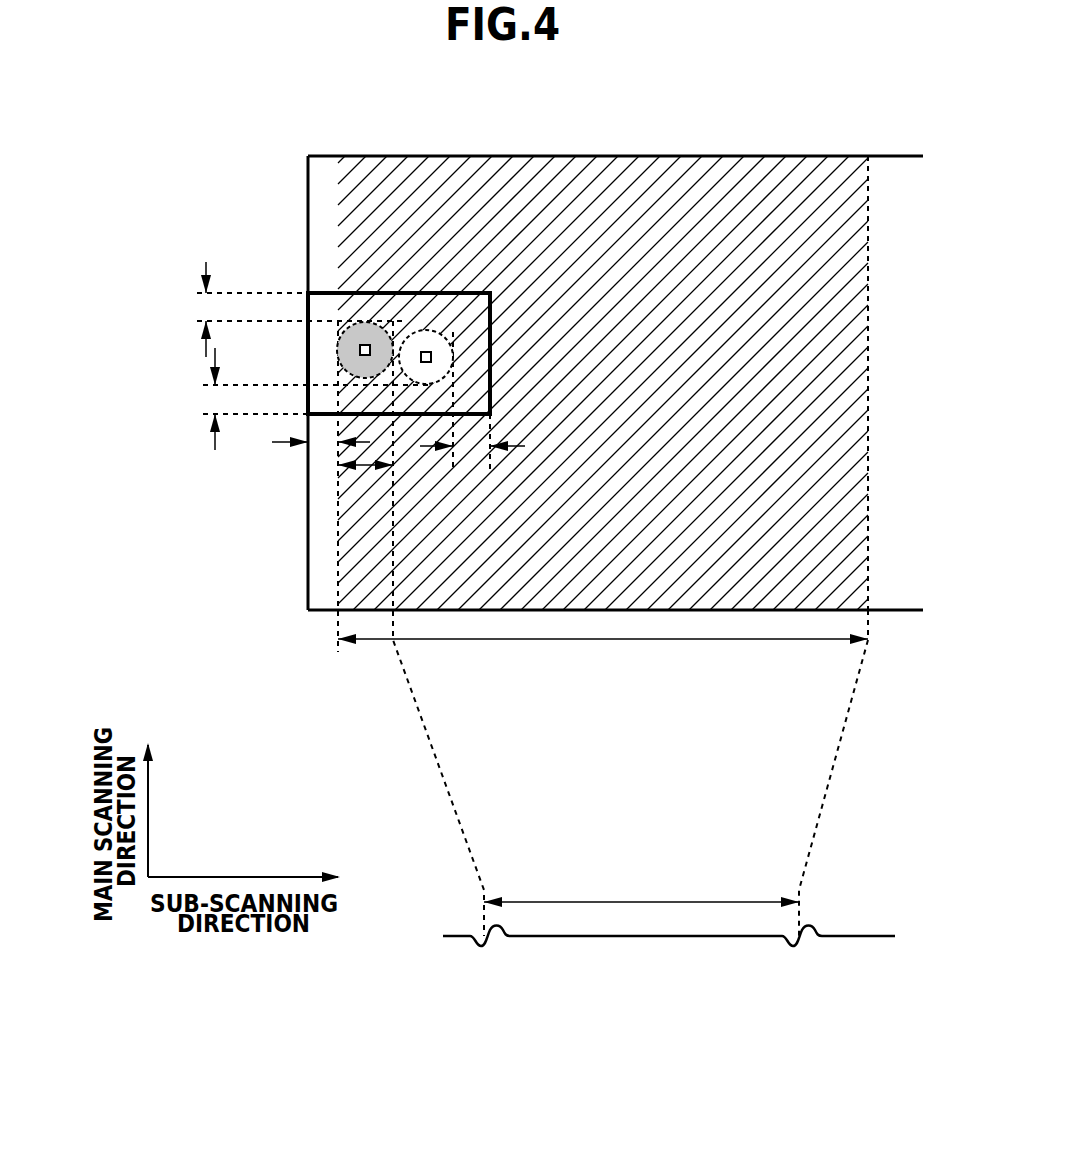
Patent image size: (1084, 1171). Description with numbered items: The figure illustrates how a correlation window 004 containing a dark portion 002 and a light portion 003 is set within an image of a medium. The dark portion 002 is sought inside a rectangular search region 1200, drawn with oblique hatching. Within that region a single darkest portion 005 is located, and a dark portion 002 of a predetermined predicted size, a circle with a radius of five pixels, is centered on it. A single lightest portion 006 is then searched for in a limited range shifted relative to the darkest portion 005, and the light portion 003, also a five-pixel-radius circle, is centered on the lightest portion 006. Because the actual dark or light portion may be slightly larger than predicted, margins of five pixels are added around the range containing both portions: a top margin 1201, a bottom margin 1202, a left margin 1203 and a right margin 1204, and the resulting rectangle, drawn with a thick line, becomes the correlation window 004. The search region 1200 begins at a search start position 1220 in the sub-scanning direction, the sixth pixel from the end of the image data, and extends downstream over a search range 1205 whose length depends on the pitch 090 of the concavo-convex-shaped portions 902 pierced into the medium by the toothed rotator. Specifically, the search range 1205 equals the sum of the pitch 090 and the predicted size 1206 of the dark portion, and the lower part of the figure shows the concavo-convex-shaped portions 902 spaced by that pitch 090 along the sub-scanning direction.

The dark portion 002 is at (348, 322).
The darkest portion 005 is at (365, 344).
The light portion 003 is at (417, 343).
The lightest portion 006 is at (427, 350).
The search region 1200 is at (695, 155).
The correlation window 004 is at (306, 355).
The top margin 1201 is at (205, 307).
The bottom margin 1202 is at (214, 402).
The left margin 1203 is at (327, 446).
The predicted size of the dark portion 1206 is at (350, 503).
The search start position 1220 is at (336, 628).
The right margin 1204 is at (472, 448).
The search range 1205 is at (603, 666).
The pitch 090 is at (641, 900).
The concavo-convex-shaped portions 902 is at (495, 947).